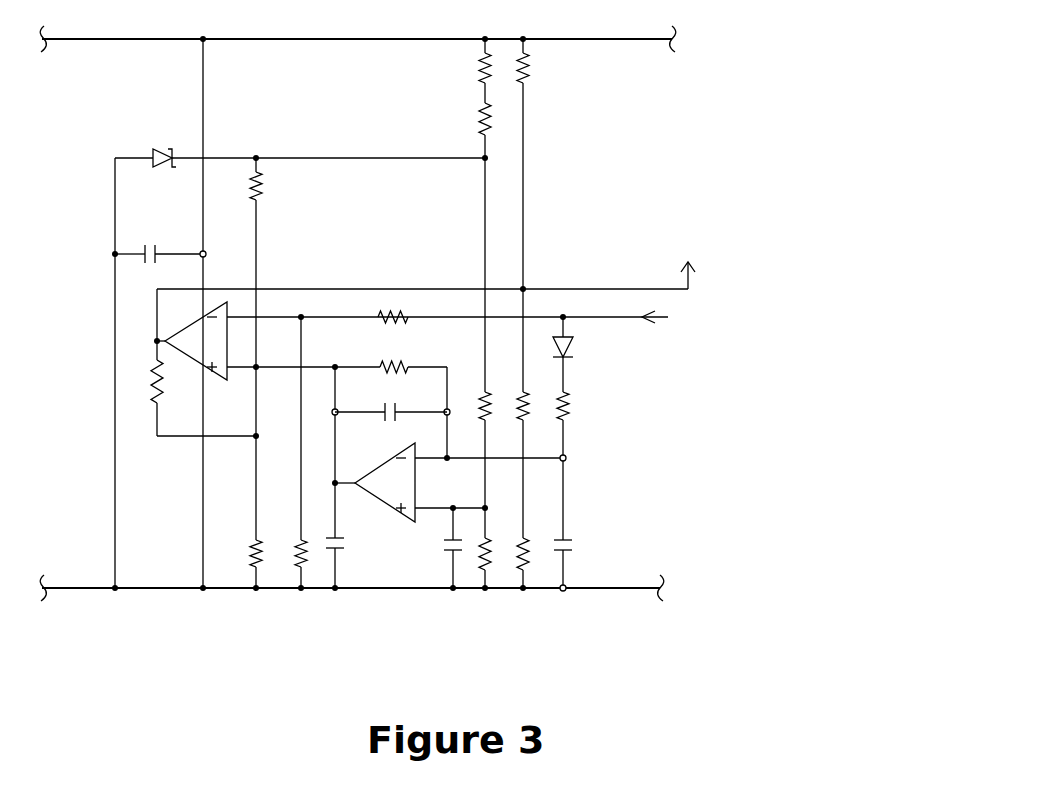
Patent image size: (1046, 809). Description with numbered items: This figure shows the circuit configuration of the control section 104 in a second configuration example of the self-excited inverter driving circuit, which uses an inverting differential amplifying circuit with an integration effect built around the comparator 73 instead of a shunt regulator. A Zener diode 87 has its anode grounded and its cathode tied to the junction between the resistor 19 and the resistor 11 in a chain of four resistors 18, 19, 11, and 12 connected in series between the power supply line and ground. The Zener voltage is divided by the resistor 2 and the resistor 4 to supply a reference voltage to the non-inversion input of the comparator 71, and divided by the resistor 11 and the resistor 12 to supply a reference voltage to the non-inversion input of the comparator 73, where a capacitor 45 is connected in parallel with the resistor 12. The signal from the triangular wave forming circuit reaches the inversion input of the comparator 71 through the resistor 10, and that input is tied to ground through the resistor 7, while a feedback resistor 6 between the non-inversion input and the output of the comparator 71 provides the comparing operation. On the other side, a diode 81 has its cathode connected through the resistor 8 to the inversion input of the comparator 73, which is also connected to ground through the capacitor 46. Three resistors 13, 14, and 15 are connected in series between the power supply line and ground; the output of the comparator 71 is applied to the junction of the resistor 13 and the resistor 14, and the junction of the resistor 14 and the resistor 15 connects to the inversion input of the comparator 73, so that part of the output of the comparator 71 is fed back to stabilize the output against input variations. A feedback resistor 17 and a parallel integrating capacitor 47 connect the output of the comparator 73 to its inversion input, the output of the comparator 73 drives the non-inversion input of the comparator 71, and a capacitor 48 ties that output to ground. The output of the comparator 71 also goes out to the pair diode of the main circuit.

The control section 104 is at (313, 141).
The Zener diode 87 is at (168, 152).
The resistor 2 is at (252, 198).
The resistor 18 is at (480, 78).
The resistor 19 is at (480, 127).
The resistor 13 is at (526, 80).
The resistor 10 is at (396, 311).
The feedback resistor 17 is at (385, 362).
The comparator 71 is at (190, 336).
The feedback resistor 6 is at (155, 383).
The integrating capacitor 47 is at (389, 419).
The comparator 73 is at (413, 516).
The capacitor 48 is at (340, 546).
The capacitor 45 is at (447, 550).
The resistor 12 is at (496, 574).
The resistor 15 is at (531, 574).
The capacitor 46 is at (572, 548).
The resistor 11 is at (488, 418).
The resistor 14 is at (528, 418).
The resistor 8 is at (567, 417).
The diode 81 is at (575, 348).
The resistor 4 is at (262, 570).
The resistor 7 is at (312, 570).